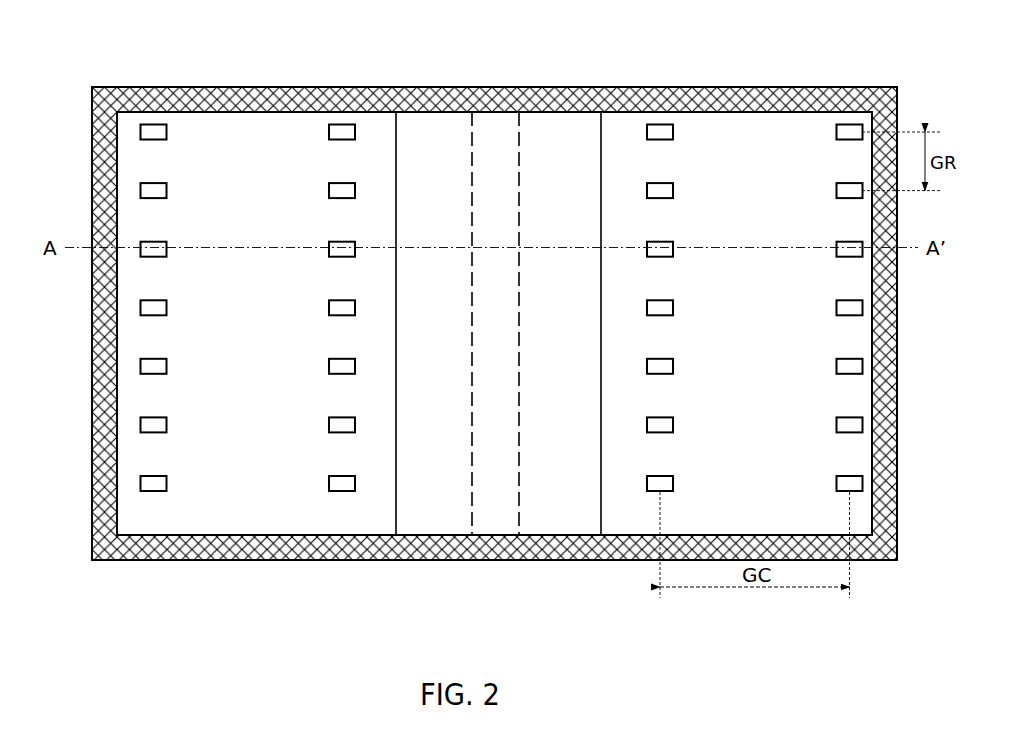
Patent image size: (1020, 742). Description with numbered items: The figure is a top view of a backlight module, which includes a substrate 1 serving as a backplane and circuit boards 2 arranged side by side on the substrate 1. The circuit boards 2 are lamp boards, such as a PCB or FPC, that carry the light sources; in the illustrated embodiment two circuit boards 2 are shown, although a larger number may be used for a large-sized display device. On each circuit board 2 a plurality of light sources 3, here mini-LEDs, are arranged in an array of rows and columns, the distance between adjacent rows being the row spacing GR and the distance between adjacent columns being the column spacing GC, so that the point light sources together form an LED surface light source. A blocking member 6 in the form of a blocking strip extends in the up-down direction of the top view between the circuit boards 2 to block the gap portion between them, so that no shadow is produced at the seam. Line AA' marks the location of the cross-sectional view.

The substrate 1 is at (882, 87).
The circuit board 2 is at (718, 127).
The light source 3 is at (328, 128).
The blocking member 6 is at (557, 140).